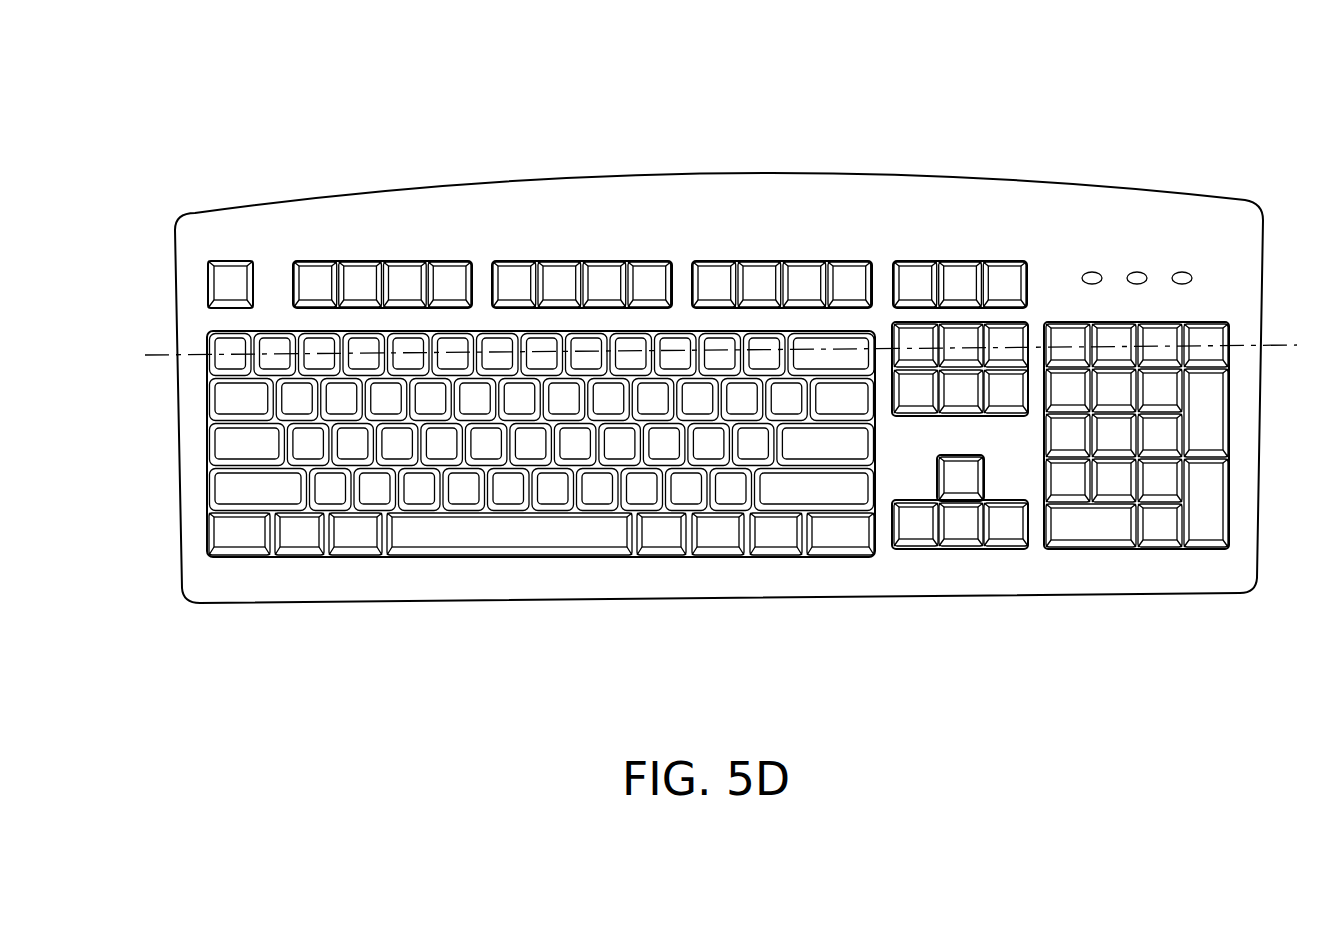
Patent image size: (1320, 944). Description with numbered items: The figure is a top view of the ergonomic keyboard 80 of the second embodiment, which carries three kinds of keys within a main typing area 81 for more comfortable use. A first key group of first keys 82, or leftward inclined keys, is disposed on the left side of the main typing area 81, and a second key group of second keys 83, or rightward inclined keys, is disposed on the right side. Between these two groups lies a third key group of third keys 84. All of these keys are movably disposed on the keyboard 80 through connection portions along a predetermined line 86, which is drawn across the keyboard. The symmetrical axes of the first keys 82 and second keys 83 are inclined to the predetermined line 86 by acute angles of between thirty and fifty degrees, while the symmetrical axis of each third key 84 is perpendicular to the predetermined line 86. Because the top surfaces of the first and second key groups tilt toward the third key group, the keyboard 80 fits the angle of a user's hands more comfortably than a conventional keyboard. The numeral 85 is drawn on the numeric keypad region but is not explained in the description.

The keyboard 80 is at (145, 78).
The main typing area 81 is at (541, 412).
The first key 82 is at (531, 345).
The second key 83 is at (451, 345).
The third key 84 is at (489, 345).
The numeric keypad 85 is at (1068, 342).
The predetermined line 86 is at (703, 355).